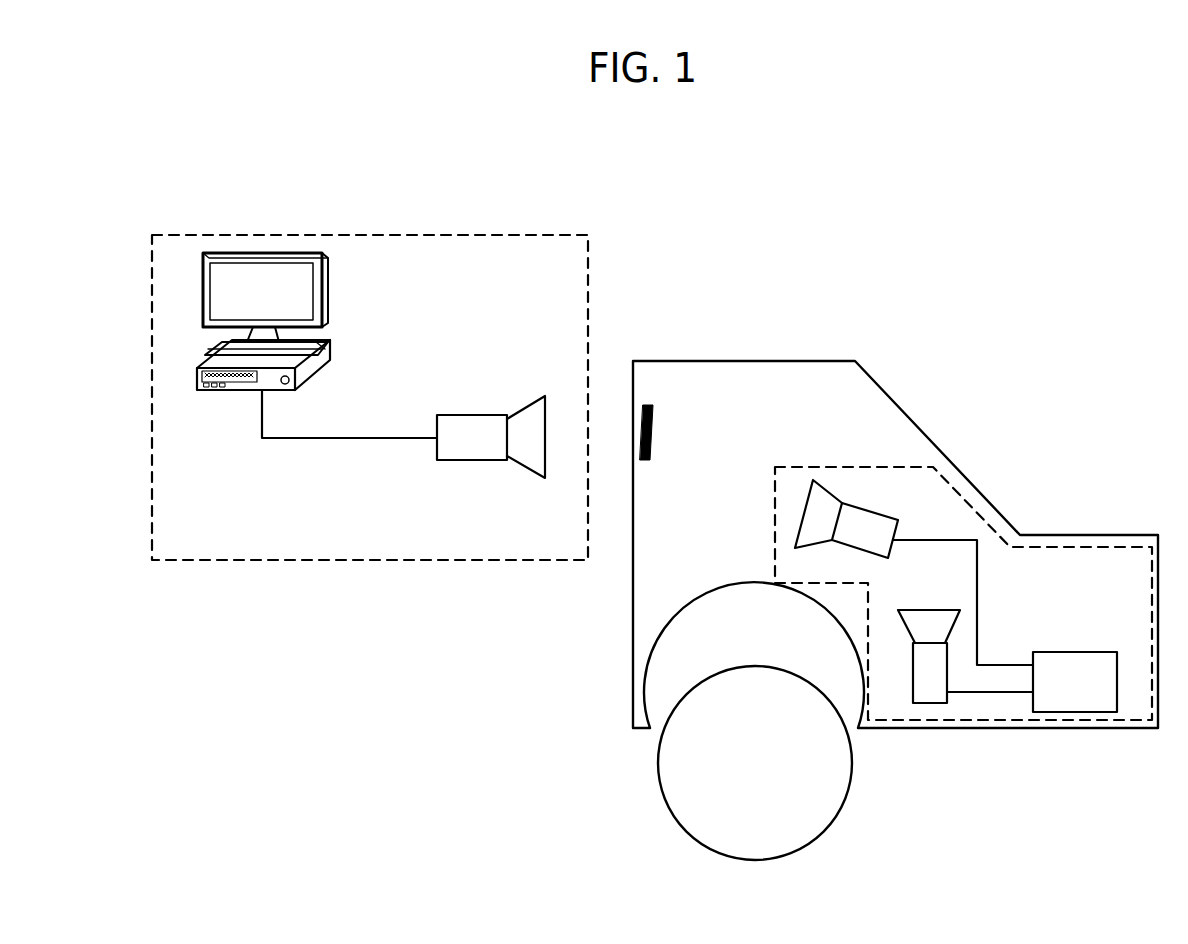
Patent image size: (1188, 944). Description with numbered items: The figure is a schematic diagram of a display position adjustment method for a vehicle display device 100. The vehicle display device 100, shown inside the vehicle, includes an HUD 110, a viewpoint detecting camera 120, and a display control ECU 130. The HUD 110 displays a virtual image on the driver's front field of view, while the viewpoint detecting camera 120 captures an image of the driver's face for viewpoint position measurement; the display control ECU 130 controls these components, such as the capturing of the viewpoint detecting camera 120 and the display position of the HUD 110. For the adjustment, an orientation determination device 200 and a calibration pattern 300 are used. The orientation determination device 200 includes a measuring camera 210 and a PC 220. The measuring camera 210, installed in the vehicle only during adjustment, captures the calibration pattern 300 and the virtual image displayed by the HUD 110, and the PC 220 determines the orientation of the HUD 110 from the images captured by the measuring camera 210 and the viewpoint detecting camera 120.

The vehicle display device 100 is at (993, 720).
The HUD 110 is at (927, 703).
The viewpoint detecting camera 120 is at (875, 508).
The display control ECU 130 is at (1065, 652).
The orientation determination device 200 is at (467, 235).
The measuring camera 210 is at (468, 460).
The PC 220 is at (243, 390).
The calibration pattern 300 is at (652, 428).